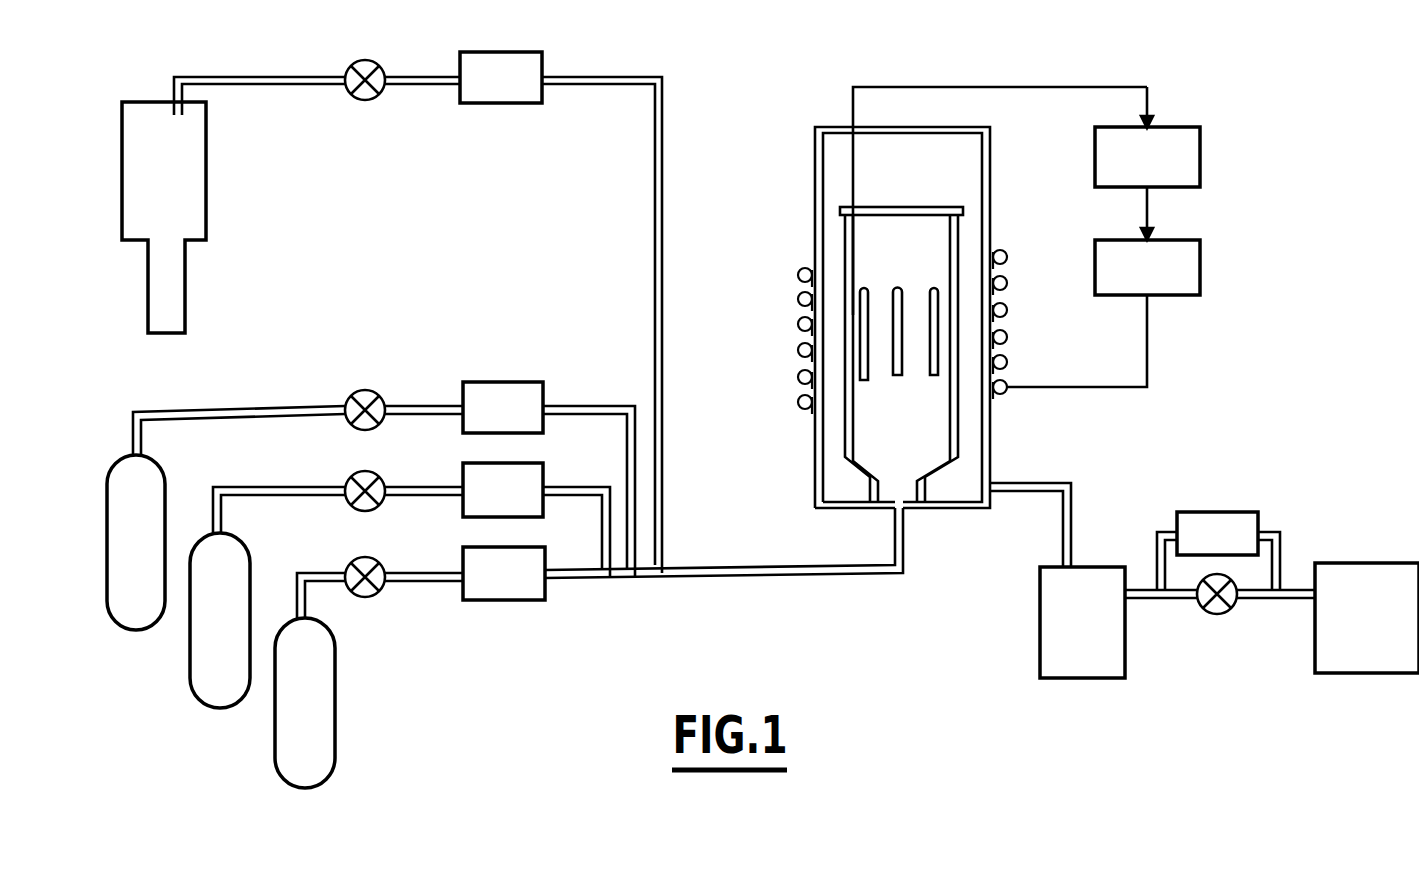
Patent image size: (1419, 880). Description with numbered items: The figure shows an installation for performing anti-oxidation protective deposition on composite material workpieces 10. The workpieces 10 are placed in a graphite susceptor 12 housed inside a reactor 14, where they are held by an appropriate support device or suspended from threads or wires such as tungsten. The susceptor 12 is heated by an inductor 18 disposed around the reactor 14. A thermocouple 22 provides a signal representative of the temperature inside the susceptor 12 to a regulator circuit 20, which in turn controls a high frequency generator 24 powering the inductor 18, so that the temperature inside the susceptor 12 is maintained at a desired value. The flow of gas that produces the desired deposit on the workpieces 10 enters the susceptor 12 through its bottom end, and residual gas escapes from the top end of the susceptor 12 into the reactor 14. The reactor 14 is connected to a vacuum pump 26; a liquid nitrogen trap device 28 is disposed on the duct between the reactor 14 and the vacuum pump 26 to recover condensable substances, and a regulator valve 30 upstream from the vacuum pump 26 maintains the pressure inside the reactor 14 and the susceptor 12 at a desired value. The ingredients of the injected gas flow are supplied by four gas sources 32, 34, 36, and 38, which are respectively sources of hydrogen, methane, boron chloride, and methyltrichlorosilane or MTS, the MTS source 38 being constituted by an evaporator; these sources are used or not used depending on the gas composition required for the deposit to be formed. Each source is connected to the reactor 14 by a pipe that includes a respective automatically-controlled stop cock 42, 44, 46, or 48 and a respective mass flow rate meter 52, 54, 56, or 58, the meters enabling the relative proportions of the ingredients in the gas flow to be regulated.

The workpieces 10 is at (897, 378).
The graphite susceptor 12 is at (958, 430).
The reactor 14 is at (813, 228).
The inductor 18 is at (800, 325).
The regulator circuit 20 is at (1200, 130).
The thermocouple 22 is at (860, 302).
The high frequency generator 24 is at (1200, 253).
The vacuum pump 26 is at (1342, 570).
The liquid nitrogen trap device 28 is at (1092, 567).
The regulator valve 30 is at (1207, 512).
The hydrogen source 32 is at (287, 755).
The methane source 34 is at (205, 673).
The boron chloride source 36 is at (124, 607).
The MTS source 38 is at (195, 225).
The automatically-controlled stop cock 42 is at (350, 565).
The automatically-controlled stop cock 44 is at (350, 478).
The automatically-controlled stop cock 46 is at (355, 392).
The automatically-controlled stop cock 48 is at (358, 102).
The mass flow rate meter 52 is at (530, 575).
The mass flow rate meter 54 is at (528, 480).
The mass flow rate meter 56 is at (525, 392).
The mass flow rate meter 58 is at (493, 103).